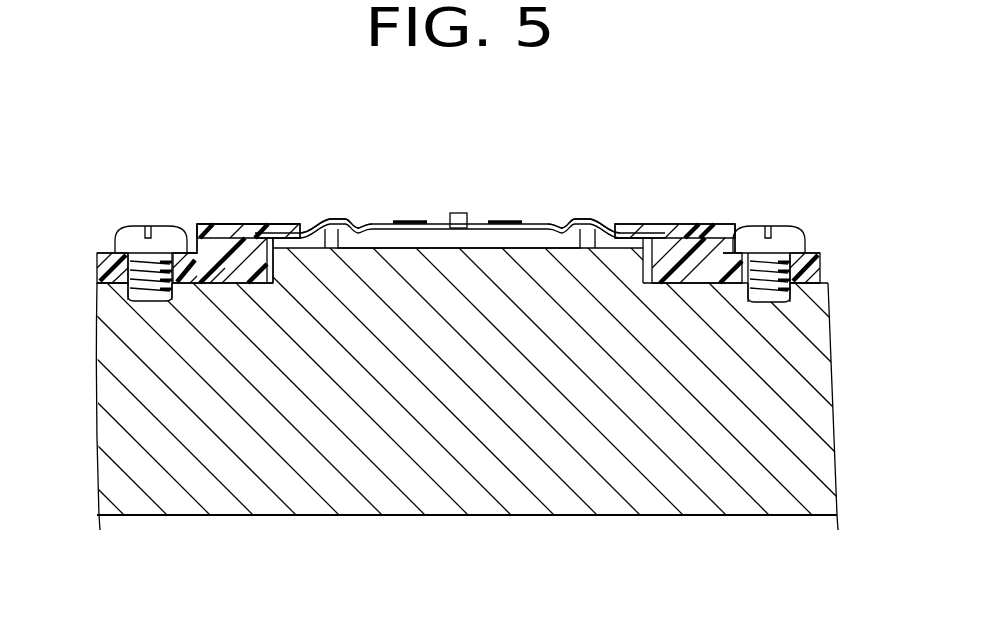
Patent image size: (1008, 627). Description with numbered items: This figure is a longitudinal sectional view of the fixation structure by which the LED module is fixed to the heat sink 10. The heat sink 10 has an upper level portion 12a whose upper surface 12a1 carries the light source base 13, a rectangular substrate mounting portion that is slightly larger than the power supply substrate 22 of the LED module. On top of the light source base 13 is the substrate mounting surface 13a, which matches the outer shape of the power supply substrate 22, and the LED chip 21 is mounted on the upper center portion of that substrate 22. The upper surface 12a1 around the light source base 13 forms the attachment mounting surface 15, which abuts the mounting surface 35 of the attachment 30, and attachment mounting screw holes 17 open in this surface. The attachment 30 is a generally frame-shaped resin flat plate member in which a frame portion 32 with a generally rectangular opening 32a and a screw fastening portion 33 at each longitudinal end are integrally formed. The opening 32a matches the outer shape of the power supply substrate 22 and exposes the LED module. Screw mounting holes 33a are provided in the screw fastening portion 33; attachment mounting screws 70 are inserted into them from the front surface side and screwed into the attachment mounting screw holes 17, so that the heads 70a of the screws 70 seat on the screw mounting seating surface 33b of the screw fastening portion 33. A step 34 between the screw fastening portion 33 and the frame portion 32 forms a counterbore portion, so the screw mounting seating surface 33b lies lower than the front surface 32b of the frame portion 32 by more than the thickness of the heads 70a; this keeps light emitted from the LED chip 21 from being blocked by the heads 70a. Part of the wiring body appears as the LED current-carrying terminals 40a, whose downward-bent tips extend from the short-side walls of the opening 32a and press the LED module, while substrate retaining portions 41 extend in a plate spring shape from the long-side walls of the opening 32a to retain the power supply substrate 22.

The heat sink 10 is at (248, 528).
The upper level portion 12a is at (504, 427).
The upper surface 12a1 is at (215, 245).
The light source base 13 is at (460, 174).
The substrate mounting surface 13a is at (385, 223).
The attachment mounting surface 15 is at (494, 165).
The attachment mounting screw hole 17 is at (135, 300).
The LED chip 21 is at (453, 213).
The power supply substrate 22 is at (537, 228).
The attachment 30 is at (248, 212).
The frame portion 32 is at (205, 223).
The opening 32a is at (290, 265).
The front surface 32b is at (419, 185).
The screw fastening portion 33 is at (97, 250).
The screw mounting hole 33a is at (128, 293).
The screw mounting seating surface 33b is at (458, 225).
The step 34 is at (183, 225).
The mounting surface 35 is at (197, 284).
The LED current-carrying terminal 40a is at (355, 222).
The substrate retaining portion 41 is at (408, 220).
The attachment mounting screw 70 is at (137, 235).
The head 70a is at (460, 184).